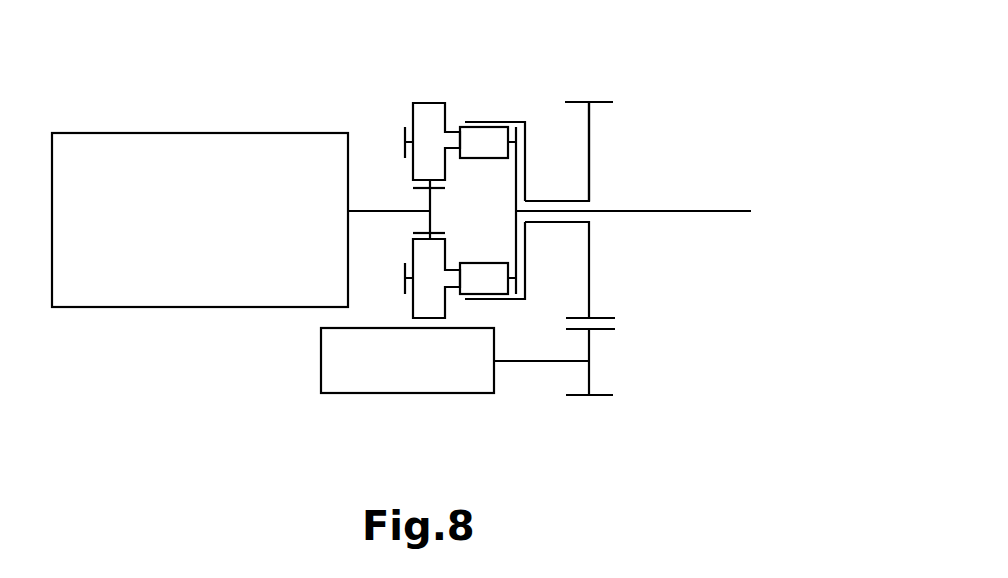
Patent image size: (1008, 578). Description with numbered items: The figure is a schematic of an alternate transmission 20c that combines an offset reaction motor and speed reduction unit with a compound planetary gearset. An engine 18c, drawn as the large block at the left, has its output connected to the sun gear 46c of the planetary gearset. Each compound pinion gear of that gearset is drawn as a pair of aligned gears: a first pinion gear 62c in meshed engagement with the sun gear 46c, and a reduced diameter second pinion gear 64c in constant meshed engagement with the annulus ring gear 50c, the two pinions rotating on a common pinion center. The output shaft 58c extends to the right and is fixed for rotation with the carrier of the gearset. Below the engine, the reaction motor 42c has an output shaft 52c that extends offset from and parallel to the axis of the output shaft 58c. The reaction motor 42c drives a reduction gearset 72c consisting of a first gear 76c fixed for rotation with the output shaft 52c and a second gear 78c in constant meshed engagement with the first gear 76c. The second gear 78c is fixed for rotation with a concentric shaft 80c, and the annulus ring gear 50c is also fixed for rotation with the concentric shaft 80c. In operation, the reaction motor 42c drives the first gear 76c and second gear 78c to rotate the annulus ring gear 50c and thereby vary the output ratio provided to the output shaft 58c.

The engine 18c is at (192, 133).
The transmission 20c is at (690, 108).
The reaction motor 42c is at (321, 361).
The sun gear 46c is at (420, 187).
The annulus ring gear 50c is at (494, 120).
The output shaft of reaction motor 52c is at (530, 362).
The output shaft 58c is at (716, 211).
The first pinion gear 62c is at (426, 103).
The second pinion gear 64c is at (481, 158).
The reduction gearset 72c is at (592, 79).
The first gear 76c is at (589, 374).
The second gear 78c is at (589, 167).
The concentric shaft 80c is at (554, 200).